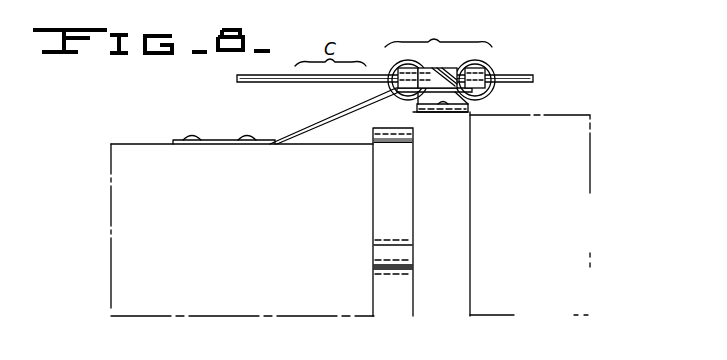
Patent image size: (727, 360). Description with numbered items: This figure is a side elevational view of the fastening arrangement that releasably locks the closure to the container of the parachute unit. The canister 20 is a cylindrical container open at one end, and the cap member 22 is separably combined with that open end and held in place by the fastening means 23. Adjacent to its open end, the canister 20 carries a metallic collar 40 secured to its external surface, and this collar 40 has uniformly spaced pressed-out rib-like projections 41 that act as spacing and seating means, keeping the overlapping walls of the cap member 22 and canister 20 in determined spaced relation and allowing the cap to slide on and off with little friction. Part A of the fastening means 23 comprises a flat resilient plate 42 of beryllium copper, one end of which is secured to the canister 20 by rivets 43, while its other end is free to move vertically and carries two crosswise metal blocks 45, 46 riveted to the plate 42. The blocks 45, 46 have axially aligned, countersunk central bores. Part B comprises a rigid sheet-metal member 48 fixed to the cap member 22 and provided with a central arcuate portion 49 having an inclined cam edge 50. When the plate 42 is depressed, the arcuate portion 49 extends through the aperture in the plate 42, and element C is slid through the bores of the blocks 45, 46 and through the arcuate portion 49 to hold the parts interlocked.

The canister 20 is at (126, 210).
The cap member 22 is at (578, 223).
The fastening means 23 is at (438, 30).
The collar 40 is at (386, 210).
The projections 41 is at (384, 256).
The plate 42 is at (330, 116).
The rivets 43 is at (250, 128).
The block 45 is at (403, 72).
The block 46 is at (487, 74).
The rigid member 48 is at (470, 110).
The arcuate portion 49 is at (427, 99).
The cam edge 50 is at (438, 72).